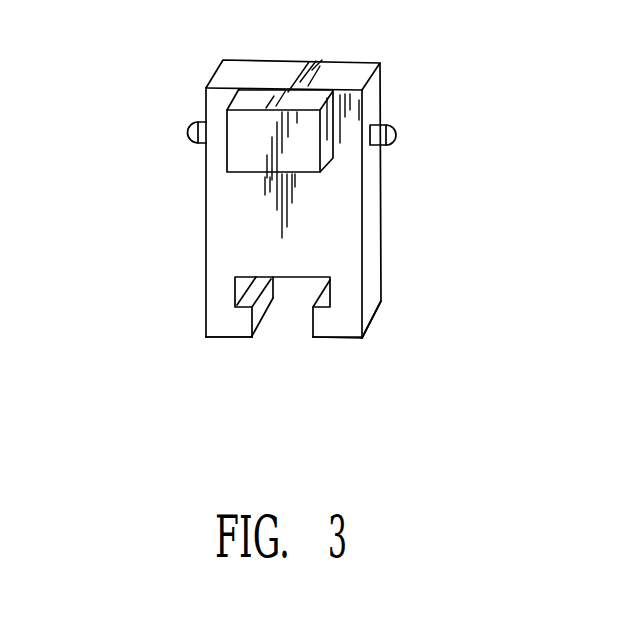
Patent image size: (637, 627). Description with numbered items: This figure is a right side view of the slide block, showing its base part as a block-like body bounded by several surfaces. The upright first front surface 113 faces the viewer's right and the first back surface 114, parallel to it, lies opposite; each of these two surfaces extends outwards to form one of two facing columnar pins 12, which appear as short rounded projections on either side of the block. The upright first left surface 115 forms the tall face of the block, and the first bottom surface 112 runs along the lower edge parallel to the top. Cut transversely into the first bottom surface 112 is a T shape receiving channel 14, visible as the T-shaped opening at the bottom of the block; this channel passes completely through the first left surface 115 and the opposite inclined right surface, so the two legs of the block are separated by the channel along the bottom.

The columnar pins 12 is at (190, 127).
The T shape receiving channel 14 is at (237, 295).
The first bottom surface 112 is at (367, 342).
The first front surface 113 is at (378, 212).
The first back surface 114 is at (203, 222).
The first left surface 115 is at (225, 253).